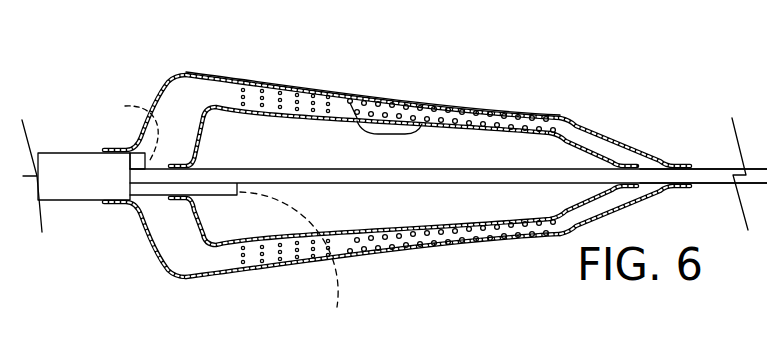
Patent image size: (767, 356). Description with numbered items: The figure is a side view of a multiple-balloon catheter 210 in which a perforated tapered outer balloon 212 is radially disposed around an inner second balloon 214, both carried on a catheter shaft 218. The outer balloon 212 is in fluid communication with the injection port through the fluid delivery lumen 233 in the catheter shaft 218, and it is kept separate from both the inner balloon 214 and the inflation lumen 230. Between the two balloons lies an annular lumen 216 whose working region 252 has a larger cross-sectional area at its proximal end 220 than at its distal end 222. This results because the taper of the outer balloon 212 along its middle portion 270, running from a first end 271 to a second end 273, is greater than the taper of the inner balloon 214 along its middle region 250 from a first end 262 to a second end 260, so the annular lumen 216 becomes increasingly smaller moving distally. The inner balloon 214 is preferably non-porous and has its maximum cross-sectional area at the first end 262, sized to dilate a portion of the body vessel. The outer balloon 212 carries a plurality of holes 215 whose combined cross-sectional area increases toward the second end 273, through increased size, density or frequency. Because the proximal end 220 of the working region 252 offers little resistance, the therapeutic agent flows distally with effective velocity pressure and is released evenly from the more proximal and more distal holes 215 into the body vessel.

The multiple-balloon catheter 210 is at (387, 83).
The perforated tapered outer balloon 212 is at (350, 92).
The inner second balloon 214 is at (562, 128).
The holes 215 is at (272, 103).
The annular lumen 216 is at (240, 93).
The catheter shaft 218 is at (83, 155).
The proximal end 220 is at (397, 257).
The distal end 222 is at (437, 260).
The inflation lumen 230 is at (304, 260).
The fluid delivery lumen 233 is at (121, 127).
The middle region 250 is at (440, 110).
The working region 252 is at (340, 243).
The second end 260 is at (560, 133).
The first end 262 is at (203, 107).
The middle portion 270 is at (328, 82).
The first end 271 is at (178, 73).
The second end 273 is at (563, 132).